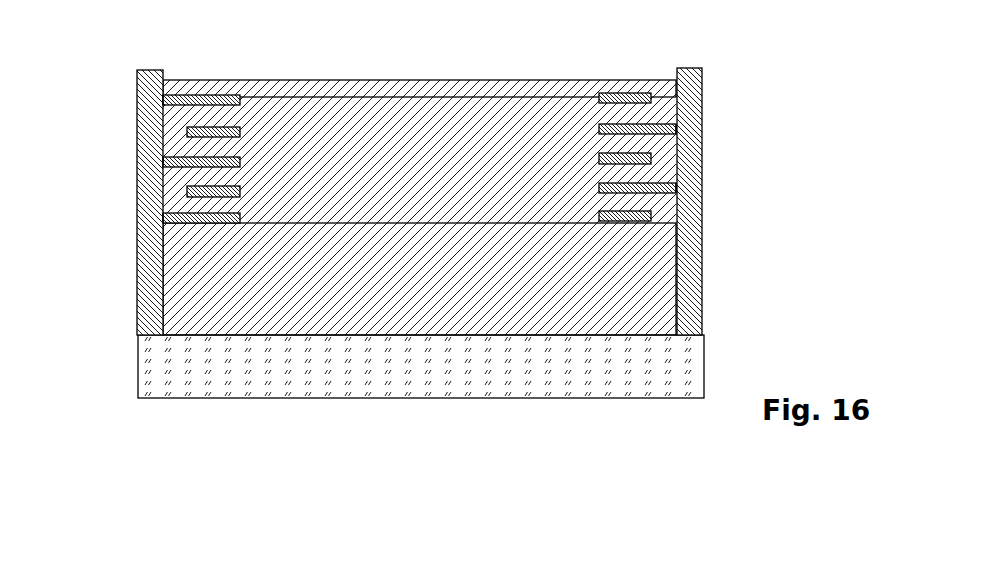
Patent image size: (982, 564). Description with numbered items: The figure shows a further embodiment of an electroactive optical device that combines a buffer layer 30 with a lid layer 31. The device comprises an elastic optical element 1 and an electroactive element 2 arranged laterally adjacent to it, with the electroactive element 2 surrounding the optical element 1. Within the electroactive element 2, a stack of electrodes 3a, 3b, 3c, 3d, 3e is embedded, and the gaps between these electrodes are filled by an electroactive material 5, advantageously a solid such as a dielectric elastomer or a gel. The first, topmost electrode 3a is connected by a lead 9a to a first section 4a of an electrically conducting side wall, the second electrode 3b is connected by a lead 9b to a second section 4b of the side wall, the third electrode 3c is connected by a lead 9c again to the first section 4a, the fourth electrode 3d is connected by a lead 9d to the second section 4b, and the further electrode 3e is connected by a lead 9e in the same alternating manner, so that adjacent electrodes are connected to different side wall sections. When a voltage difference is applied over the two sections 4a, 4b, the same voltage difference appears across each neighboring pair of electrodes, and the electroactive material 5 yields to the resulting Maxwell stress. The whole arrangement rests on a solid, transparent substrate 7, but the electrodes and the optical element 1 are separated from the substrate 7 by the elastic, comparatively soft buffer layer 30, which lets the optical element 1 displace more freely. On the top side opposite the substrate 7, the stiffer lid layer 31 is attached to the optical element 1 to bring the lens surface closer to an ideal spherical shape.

The optical element 1 is at (310, 70).
The electroactive element 2 is at (200, 68).
The first electrode 3a is at (384, 52).
The second electrode 3b is at (390, 92).
The third electrode 3c is at (418, 153).
The fourth electrode 3d is at (416, 179).
The fifth electrode 3e is at (415, 272).
The first section of side wall 4a is at (126, 202).
The second section of side wall 4b is at (712, 201).
The electroactive material 5 is at (412, 84).
The substrate 7 is at (421, 388).
The lead 9a is at (135, 71).
The lead 9b is at (719, 88).
The lead 9c is at (102, 158).
The lead 9d is at (722, 172).
The lead 9e is at (124, 250).
The buffer layer 30 is at (419, 337).
The lid layer 31 is at (419, 63).